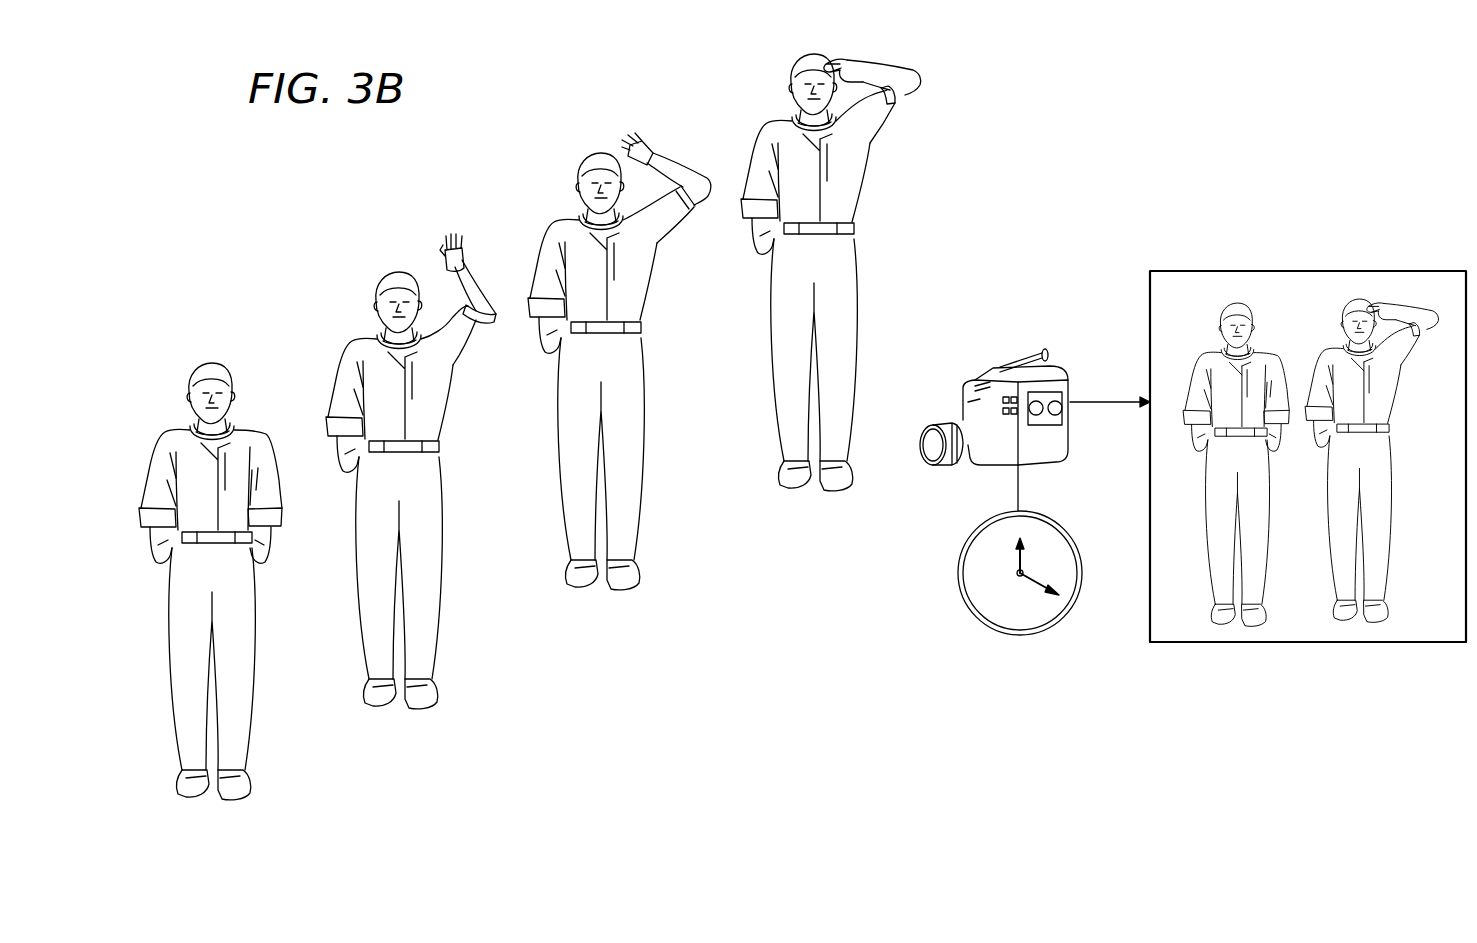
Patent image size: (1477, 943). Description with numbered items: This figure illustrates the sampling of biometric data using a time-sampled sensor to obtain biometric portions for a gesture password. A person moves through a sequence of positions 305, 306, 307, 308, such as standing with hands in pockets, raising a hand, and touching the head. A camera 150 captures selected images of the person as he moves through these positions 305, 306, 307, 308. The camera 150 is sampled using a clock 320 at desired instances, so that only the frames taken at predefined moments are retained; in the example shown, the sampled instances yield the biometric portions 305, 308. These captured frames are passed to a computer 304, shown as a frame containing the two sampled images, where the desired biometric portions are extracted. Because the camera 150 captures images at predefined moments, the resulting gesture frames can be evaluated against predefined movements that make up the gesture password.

The position 305 is at (207, 362).
The position 306 is at (389, 271).
The position 307 is at (597, 152).
The position 308 is at (803, 52).
The camera 150 is at (995, 368).
The clock 320 is at (1018, 634).
The computer 304 is at (1207, 352).